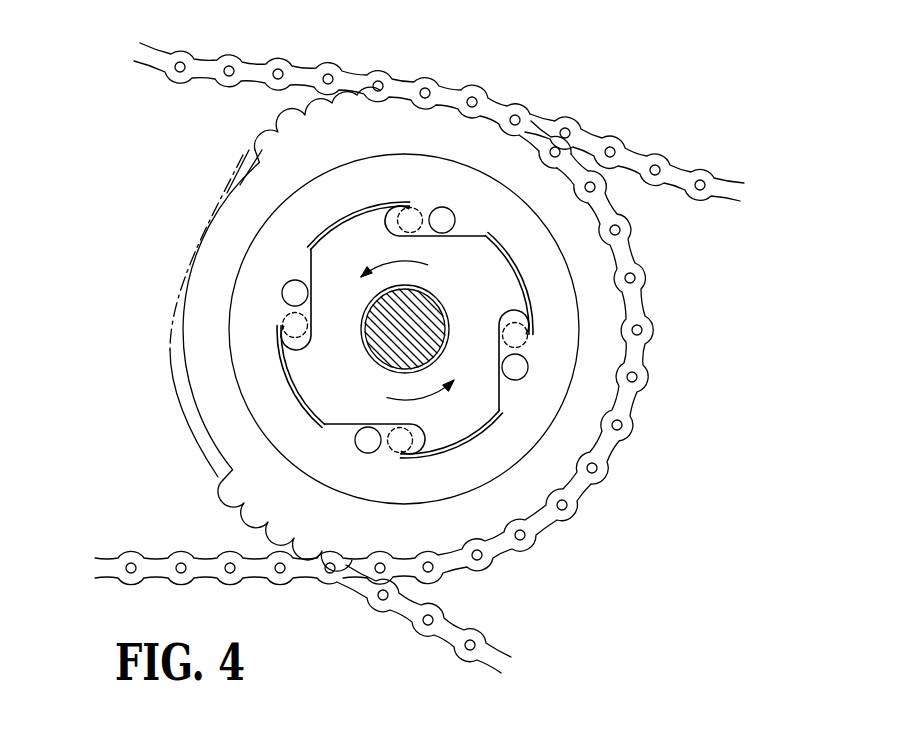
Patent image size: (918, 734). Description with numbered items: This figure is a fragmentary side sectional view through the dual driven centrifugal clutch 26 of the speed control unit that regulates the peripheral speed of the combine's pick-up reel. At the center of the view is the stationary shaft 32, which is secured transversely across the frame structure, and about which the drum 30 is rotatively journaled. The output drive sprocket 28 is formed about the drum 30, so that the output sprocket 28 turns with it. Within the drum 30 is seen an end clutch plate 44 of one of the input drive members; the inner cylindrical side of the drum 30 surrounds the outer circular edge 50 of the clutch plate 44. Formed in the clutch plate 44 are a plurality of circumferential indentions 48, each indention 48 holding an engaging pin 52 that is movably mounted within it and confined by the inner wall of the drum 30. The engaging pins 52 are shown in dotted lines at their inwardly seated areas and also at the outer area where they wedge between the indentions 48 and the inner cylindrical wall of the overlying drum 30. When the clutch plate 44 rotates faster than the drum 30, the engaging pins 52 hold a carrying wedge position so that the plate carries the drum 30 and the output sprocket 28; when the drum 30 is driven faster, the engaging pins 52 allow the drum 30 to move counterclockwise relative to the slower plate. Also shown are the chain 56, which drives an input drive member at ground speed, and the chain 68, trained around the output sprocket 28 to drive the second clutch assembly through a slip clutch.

The dual driven centrifugal clutch 26 is at (683, 63).
The output drive sprocket 28 is at (258, 178).
The drum 30 is at (573, 275).
The stationary shaft 32 is at (385, 375).
The end clutch plate 44 is at (330, 235).
The indention 48 is at (468, 236).
The outer circular edge 50 is at (542, 530).
The engaging pin 52 is at (412, 212).
The chain 56 is at (680, 163).
The chain 68 is at (322, 61).